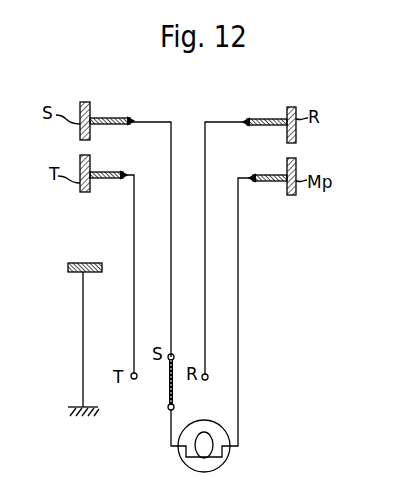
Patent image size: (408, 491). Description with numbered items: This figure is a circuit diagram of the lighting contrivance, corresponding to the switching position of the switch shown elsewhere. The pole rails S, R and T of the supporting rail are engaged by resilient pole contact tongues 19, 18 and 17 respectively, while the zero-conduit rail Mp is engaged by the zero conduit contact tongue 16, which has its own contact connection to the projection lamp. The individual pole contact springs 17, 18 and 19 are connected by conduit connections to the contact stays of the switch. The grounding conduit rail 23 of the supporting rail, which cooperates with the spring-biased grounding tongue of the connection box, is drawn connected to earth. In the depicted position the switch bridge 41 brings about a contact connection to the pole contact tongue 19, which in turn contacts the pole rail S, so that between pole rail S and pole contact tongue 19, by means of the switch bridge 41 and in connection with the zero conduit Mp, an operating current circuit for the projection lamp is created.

The pole contact tongue 19 is at (113, 118).
The pole contact tongue 17 is at (105, 180).
The pole contact tongue 18 is at (264, 118).
The zero conduit contact tongue 16 is at (260, 182).
The grounding conduit rail 23 is at (82, 262).
The switching bridge 41 is at (169, 392).